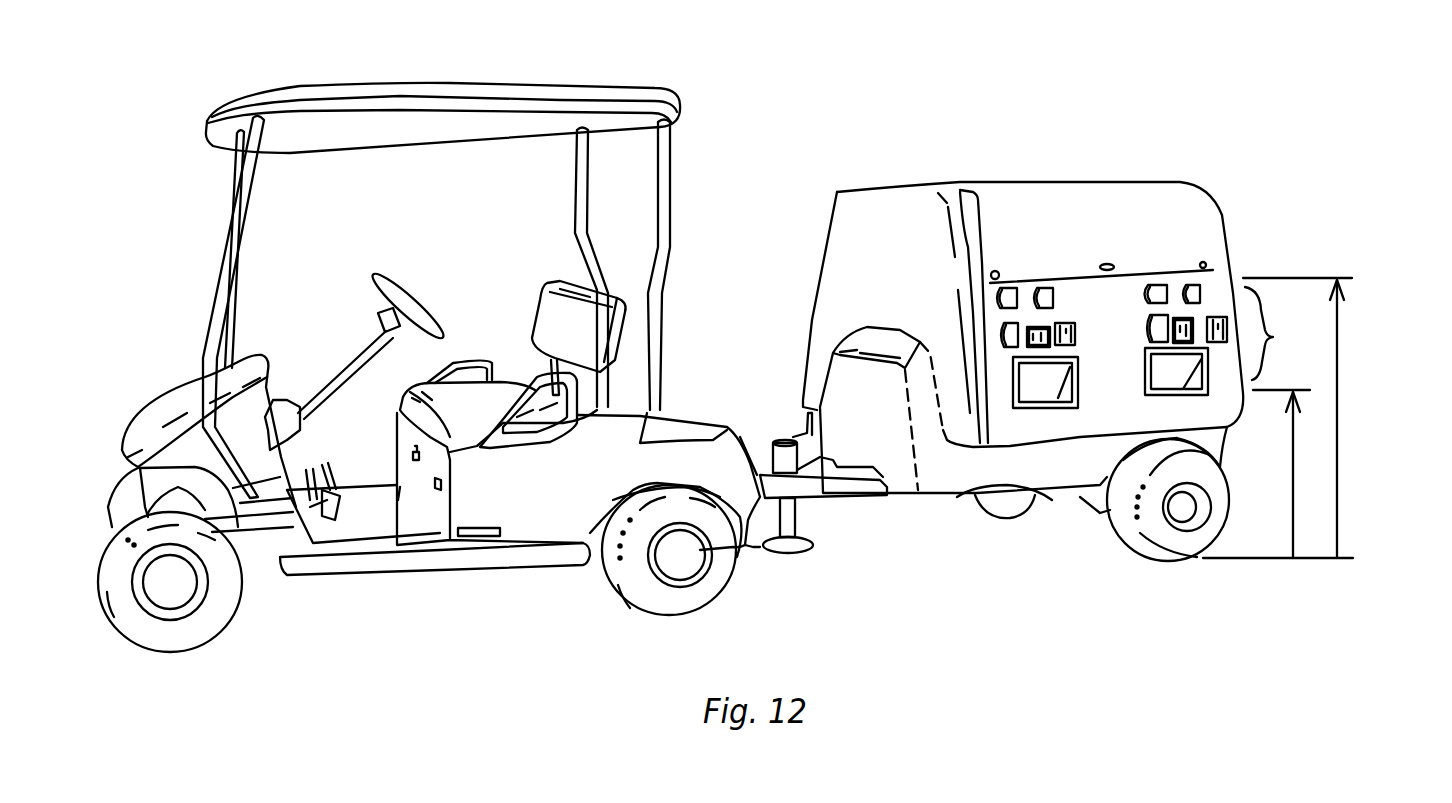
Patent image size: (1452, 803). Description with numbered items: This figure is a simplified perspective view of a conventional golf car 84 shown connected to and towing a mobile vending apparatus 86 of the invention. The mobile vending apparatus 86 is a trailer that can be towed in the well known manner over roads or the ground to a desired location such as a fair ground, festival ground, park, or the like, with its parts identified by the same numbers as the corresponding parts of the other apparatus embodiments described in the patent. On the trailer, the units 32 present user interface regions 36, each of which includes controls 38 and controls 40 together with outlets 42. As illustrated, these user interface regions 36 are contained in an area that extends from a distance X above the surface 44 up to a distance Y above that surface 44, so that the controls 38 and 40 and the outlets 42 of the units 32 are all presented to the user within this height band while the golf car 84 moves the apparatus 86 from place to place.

The golf car 84 is at (717, 128).
The mobile vending apparatus 86 is at (1218, 140).
The unit 32 is at (1041, 266).
The controls 38 is at (1037, 290).
The controls 40 is at (1040, 326).
The outlets 42 is at (1168, 393).
The user interface region 36 is at (1278, 333).
The surface 44 is at (1347, 557).
The distance X is at (1293, 483).
The distance Y is at (1337, 417).